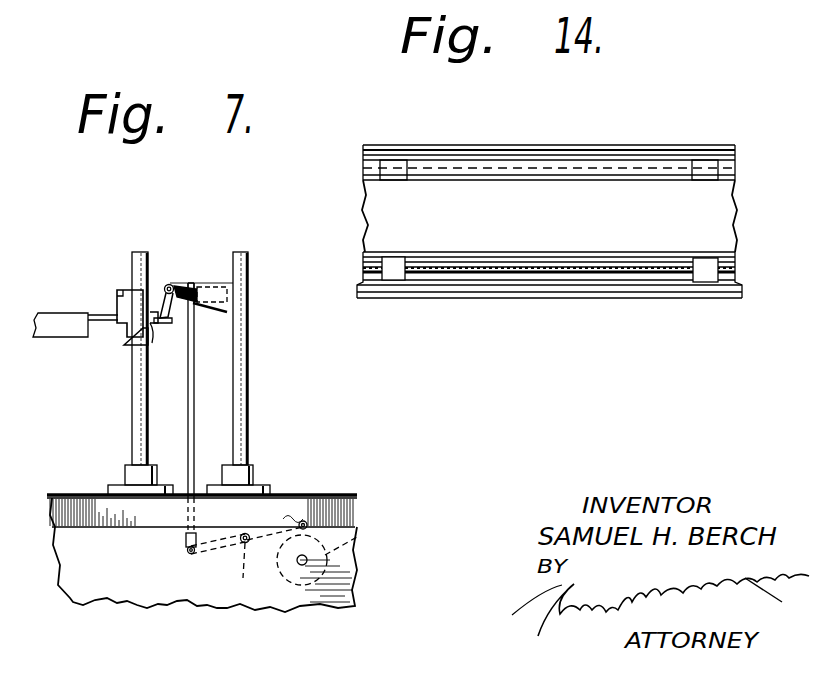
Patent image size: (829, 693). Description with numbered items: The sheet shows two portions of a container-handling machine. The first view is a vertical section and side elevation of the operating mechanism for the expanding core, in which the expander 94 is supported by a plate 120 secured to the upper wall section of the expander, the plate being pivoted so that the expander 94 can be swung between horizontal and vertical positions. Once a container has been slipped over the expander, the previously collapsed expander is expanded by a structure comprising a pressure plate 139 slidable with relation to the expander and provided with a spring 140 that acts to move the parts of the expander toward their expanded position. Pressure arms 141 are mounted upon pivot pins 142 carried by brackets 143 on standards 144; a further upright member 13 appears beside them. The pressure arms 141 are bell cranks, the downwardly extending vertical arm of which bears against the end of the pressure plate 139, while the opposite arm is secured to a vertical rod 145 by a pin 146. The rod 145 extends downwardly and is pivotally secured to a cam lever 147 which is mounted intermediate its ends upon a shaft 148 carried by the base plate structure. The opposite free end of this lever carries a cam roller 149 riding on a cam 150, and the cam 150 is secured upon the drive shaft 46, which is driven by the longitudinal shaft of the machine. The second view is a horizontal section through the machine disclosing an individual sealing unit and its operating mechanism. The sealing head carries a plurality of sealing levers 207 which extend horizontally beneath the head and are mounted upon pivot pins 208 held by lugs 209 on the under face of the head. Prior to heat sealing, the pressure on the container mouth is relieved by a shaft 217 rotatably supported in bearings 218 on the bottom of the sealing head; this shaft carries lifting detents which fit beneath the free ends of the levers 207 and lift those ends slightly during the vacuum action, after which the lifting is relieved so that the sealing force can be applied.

In FIG. 7, the vertical guide post 13 is at (132, 267).
In FIG. 7, the expander 94 is at (50, 314).
In FIG. 7, the plate 120 is at (100, 322).
In FIG. 7, the pressure plate 139 is at (134, 340).
In FIG. 7, the spring 140 is at (148, 348).
In FIG. 7, the pressure arms 141 is at (172, 312).
In FIG. 7, the pivot pins 142 is at (170, 285).
In FIG. 7, the brackets 143 is at (228, 300).
In FIG. 7, the standards 144 is at (249, 276).
In FIG. 7, the vertical rod 145 is at (188, 412).
In FIG. 7, the pin 146 is at (194, 283).
In FIG. 7, the cam lever 147 is at (211, 555).
In FIG. 7, the shaft 148 is at (243, 576).
In FIG. 7, the cam roller 149 is at (305, 527).
In FIG. 7, the cam 150 is at (357, 537).
In FIG. 7, the drive shaft 46 is at (302, 565).
In FIG. 14, the sealing levers 207 is at (593, 242).
In FIG. 14, the pivot pins 208 is at (605, 168).
In FIG. 14, the lugs 209 is at (410, 131).
In FIG. 14, the shaft 217 is at (520, 270).
In FIG. 14, the bearings 218 is at (396, 270).